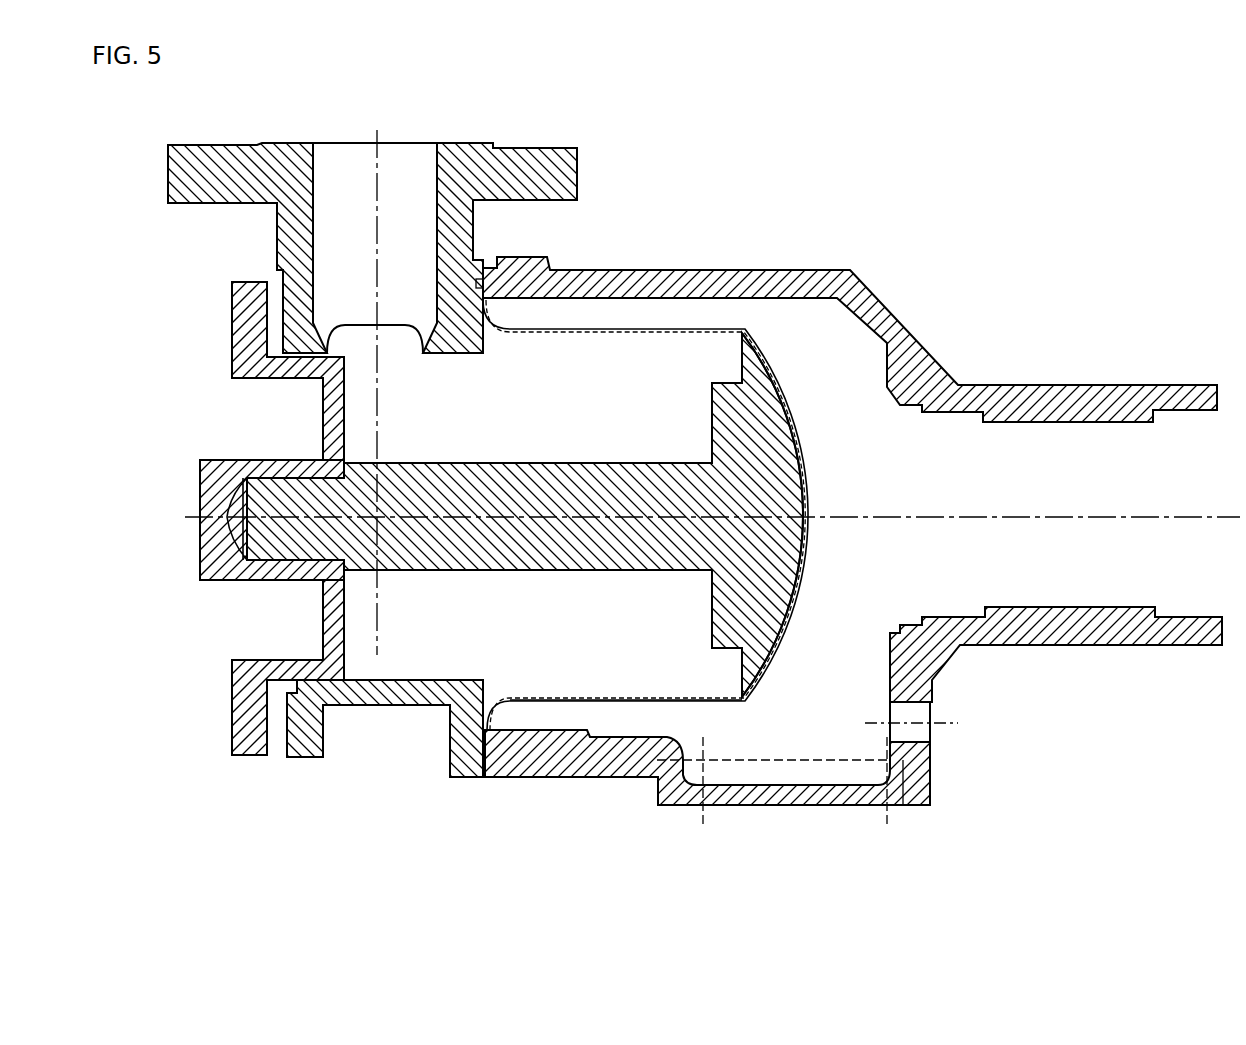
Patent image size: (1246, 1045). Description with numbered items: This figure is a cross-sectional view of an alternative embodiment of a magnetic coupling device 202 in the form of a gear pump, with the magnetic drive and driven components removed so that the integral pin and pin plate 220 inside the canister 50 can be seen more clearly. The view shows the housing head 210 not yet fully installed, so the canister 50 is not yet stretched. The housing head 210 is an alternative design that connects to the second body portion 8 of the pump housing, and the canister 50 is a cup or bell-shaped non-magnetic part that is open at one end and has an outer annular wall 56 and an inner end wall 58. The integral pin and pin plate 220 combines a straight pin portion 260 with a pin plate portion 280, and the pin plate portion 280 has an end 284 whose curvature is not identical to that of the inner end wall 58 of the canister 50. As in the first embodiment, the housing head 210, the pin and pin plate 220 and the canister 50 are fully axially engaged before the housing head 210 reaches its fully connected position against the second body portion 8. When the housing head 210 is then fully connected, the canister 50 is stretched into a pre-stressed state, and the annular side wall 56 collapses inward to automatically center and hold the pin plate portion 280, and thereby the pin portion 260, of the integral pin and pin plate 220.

The magnetic coupling device 202 is at (768, 203).
The inner end wall 58 is at (804, 369).
The housing head 210 is at (248, 748).
The second body portion 8 is at (309, 750).
The outer annular wall 56 is at (618, 704).
The pin portion 260 is at (522, 556).
The integral pin and pin plate 220 is at (594, 587).
The canister 50 is at (654, 721).
The end 284 is at (789, 650).
The pin plate portion 280 is at (806, 640).